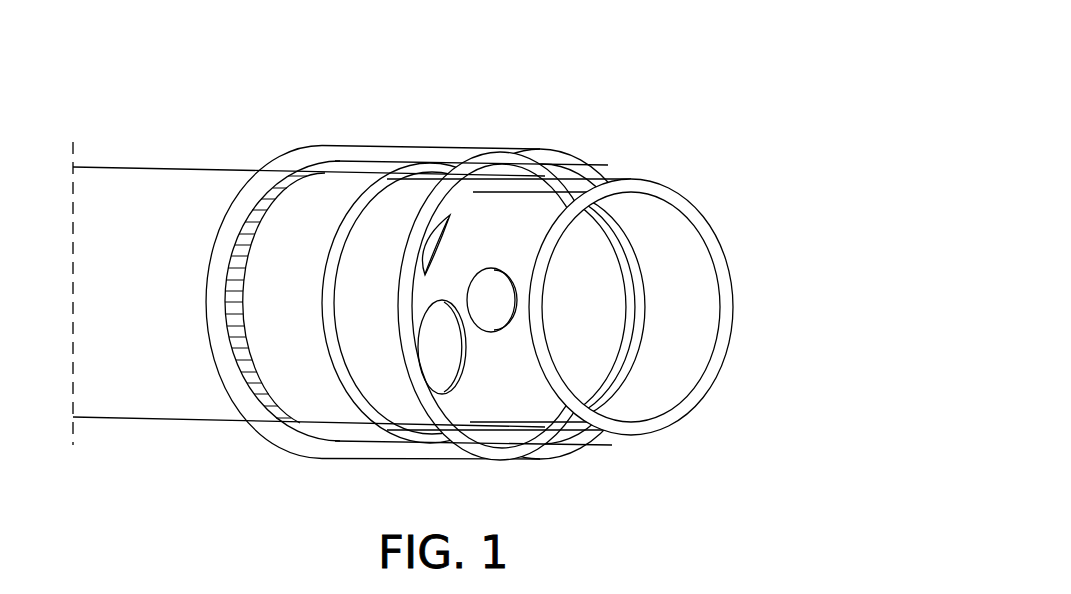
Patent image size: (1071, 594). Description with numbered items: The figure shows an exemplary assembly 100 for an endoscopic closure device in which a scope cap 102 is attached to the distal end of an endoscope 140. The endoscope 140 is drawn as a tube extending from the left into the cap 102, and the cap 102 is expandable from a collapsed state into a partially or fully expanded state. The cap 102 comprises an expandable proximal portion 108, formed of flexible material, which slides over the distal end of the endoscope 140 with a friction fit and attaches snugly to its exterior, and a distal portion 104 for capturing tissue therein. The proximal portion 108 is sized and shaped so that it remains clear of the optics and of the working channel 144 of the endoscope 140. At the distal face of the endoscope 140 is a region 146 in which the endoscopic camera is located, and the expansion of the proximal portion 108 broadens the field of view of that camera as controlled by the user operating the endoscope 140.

The assembly 100 is at (764, 90).
The scope cap 102 is at (515, 283).
The distal portion 104 is at (734, 205).
The proximal portion 108 is at (388, 125).
The endoscope 140 is at (128, 131).
The working channel 144 is at (443, 345).
The region 146 is at (492, 302).